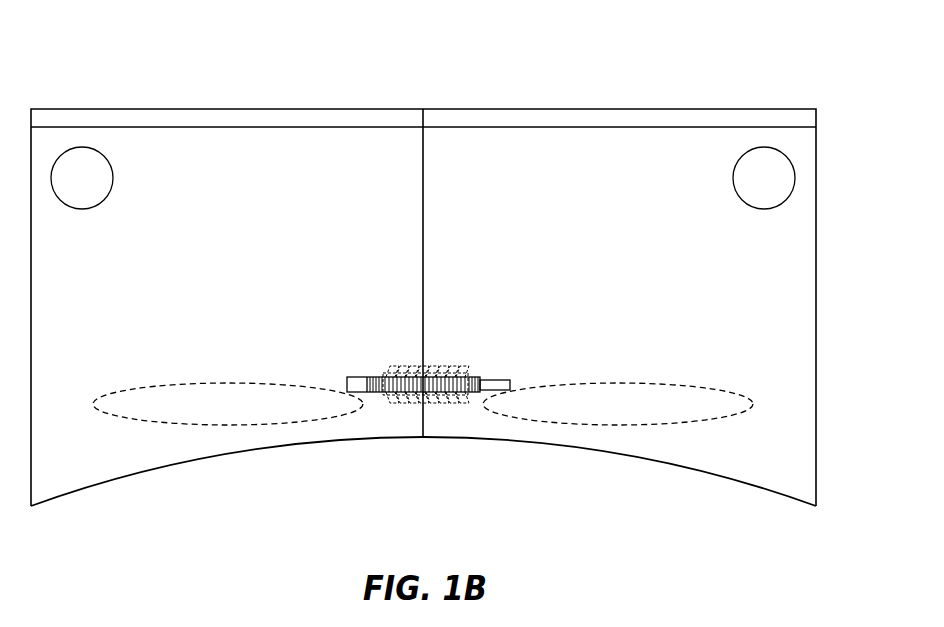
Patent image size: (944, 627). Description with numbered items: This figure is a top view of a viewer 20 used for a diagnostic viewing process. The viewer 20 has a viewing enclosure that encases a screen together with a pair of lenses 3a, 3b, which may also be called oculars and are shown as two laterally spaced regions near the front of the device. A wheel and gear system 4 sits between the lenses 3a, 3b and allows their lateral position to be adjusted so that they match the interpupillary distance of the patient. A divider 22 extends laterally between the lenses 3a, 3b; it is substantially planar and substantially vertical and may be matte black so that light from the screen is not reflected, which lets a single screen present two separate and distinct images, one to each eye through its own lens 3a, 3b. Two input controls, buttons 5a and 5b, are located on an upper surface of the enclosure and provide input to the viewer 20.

The viewer 20 is at (766, 73).
The divider 22 is at (423, 234).
The button 5a is at (96, 190).
The button 5b is at (778, 190).
The lens 3a is at (214, 417).
The lens 3b is at (604, 417).
The wheel and gear system 4 is at (462, 398).